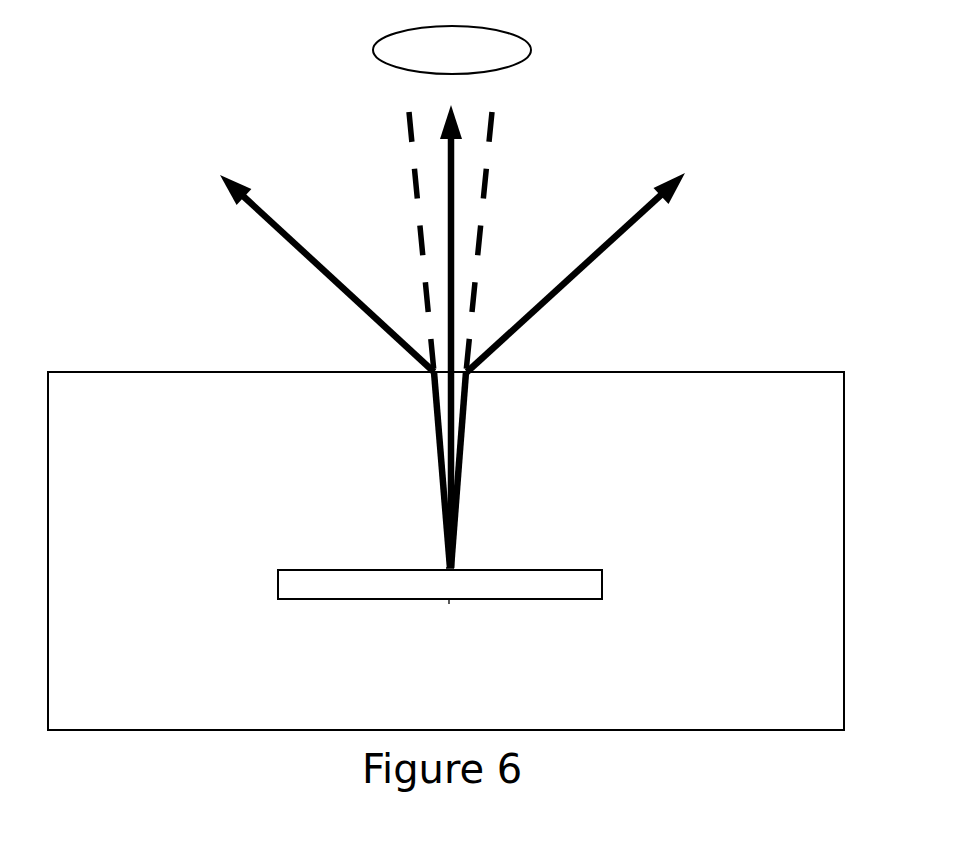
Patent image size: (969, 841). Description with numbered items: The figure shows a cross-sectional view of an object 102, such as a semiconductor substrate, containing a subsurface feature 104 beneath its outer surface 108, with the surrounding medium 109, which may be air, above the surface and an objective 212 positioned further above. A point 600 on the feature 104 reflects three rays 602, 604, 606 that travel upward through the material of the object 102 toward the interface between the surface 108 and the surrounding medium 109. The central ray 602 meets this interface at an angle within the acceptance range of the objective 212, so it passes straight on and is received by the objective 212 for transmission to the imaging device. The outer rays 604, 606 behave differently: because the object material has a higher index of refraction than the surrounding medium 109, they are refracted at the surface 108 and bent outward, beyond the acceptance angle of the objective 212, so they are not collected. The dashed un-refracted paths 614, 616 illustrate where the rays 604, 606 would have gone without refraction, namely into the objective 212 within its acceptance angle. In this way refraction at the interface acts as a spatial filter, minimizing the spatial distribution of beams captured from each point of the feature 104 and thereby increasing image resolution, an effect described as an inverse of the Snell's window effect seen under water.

The object 102 is at (753, 372).
The subsurface feature 104 is at (557, 570).
The outer surface 108 is at (178, 326).
The surrounding medium 109 is at (84, 148).
The objective 212 is at (531, 49).
The point 600 is at (458, 560).
The ray 602 is at (455, 168).
The ray 604 is at (268, 223).
The ray 606 is at (637, 222).
The un-refracted path 614 is at (411, 173).
The un-refracted path 616 is at (488, 173).